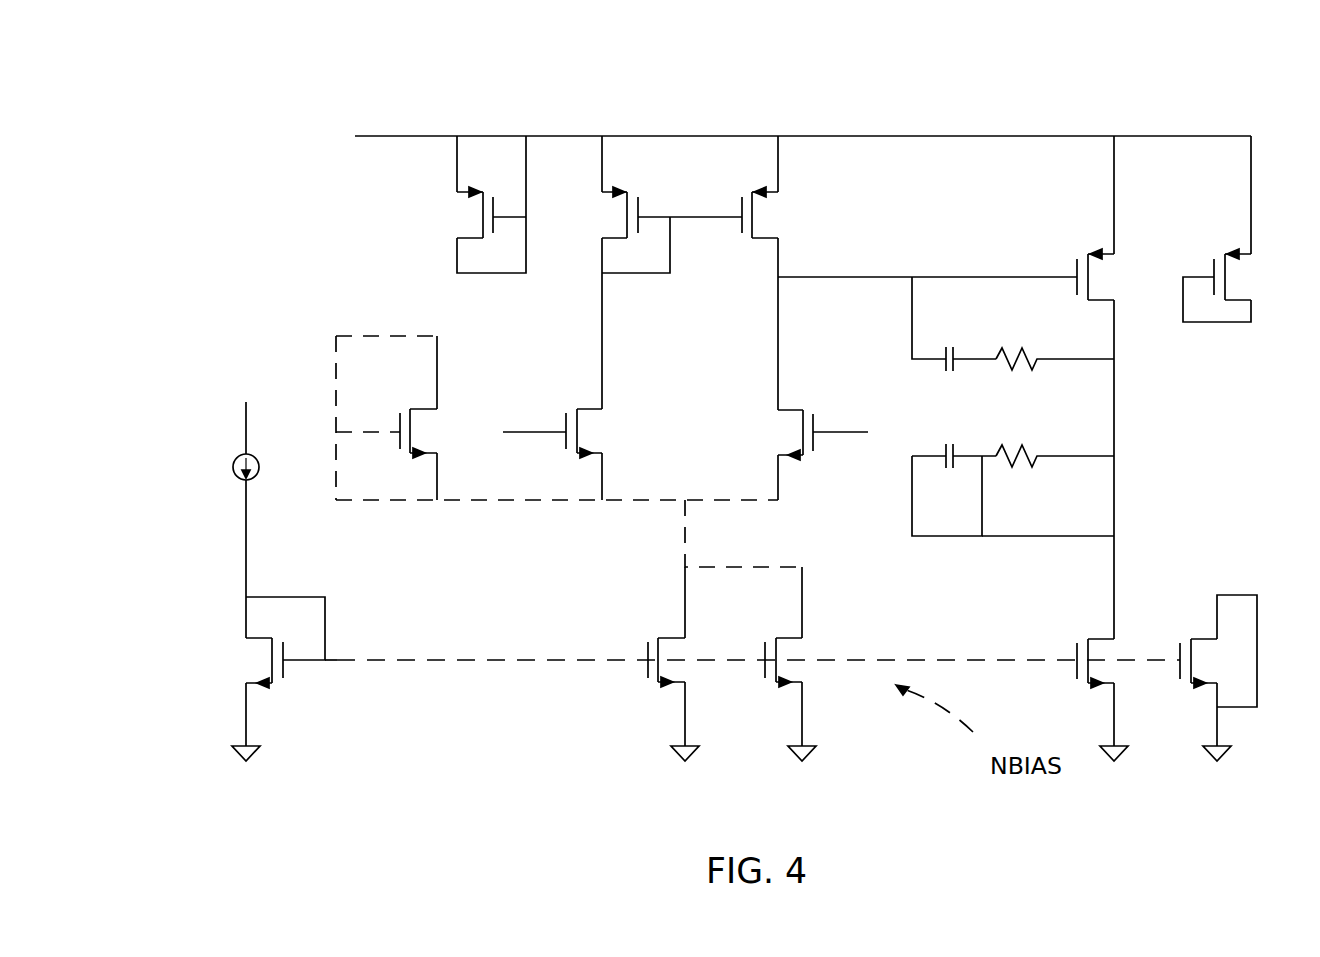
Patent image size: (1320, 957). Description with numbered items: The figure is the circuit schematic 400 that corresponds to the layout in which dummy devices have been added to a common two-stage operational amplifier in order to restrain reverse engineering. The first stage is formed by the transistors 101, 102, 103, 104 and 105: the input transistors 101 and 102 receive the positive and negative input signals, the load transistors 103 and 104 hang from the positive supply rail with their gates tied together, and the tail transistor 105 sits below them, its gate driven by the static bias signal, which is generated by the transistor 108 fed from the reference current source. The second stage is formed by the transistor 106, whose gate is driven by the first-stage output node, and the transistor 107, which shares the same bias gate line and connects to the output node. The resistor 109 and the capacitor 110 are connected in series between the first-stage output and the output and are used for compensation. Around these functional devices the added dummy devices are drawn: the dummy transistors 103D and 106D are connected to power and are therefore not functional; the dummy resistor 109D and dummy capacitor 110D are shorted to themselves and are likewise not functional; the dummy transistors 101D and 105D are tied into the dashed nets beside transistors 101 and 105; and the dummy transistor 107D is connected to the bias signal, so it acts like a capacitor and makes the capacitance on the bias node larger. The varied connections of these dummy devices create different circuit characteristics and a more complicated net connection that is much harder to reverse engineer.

The circuit schematic 400 is at (340, 118).
The transistor 101 is at (557, 448).
The dummy transistor 101D is at (557, 418).
The transistor 102 is at (811, 447).
The transistor 103 is at (646, 272).
The dummy transistor 103D is at (462, 204).
The transistor 104 is at (909, 273).
The transistor 105 is at (651, 664).
The dummy transistor 105D is at (765, 664).
The transistor 106 is at (1117, 218).
The dummy transistor 106D is at (1247, 229).
The transistor 107 is at (1107, 530).
The dummy transistor 107D is at (1199, 678).
The transistor 108 is at (241, 581).
The resistor 109 is at (1055, 380).
The dummy resistor 109D is at (1048, 490).
The capacitor 110 is at (954, 344).
The dummy capacitor 110D is at (954, 490).